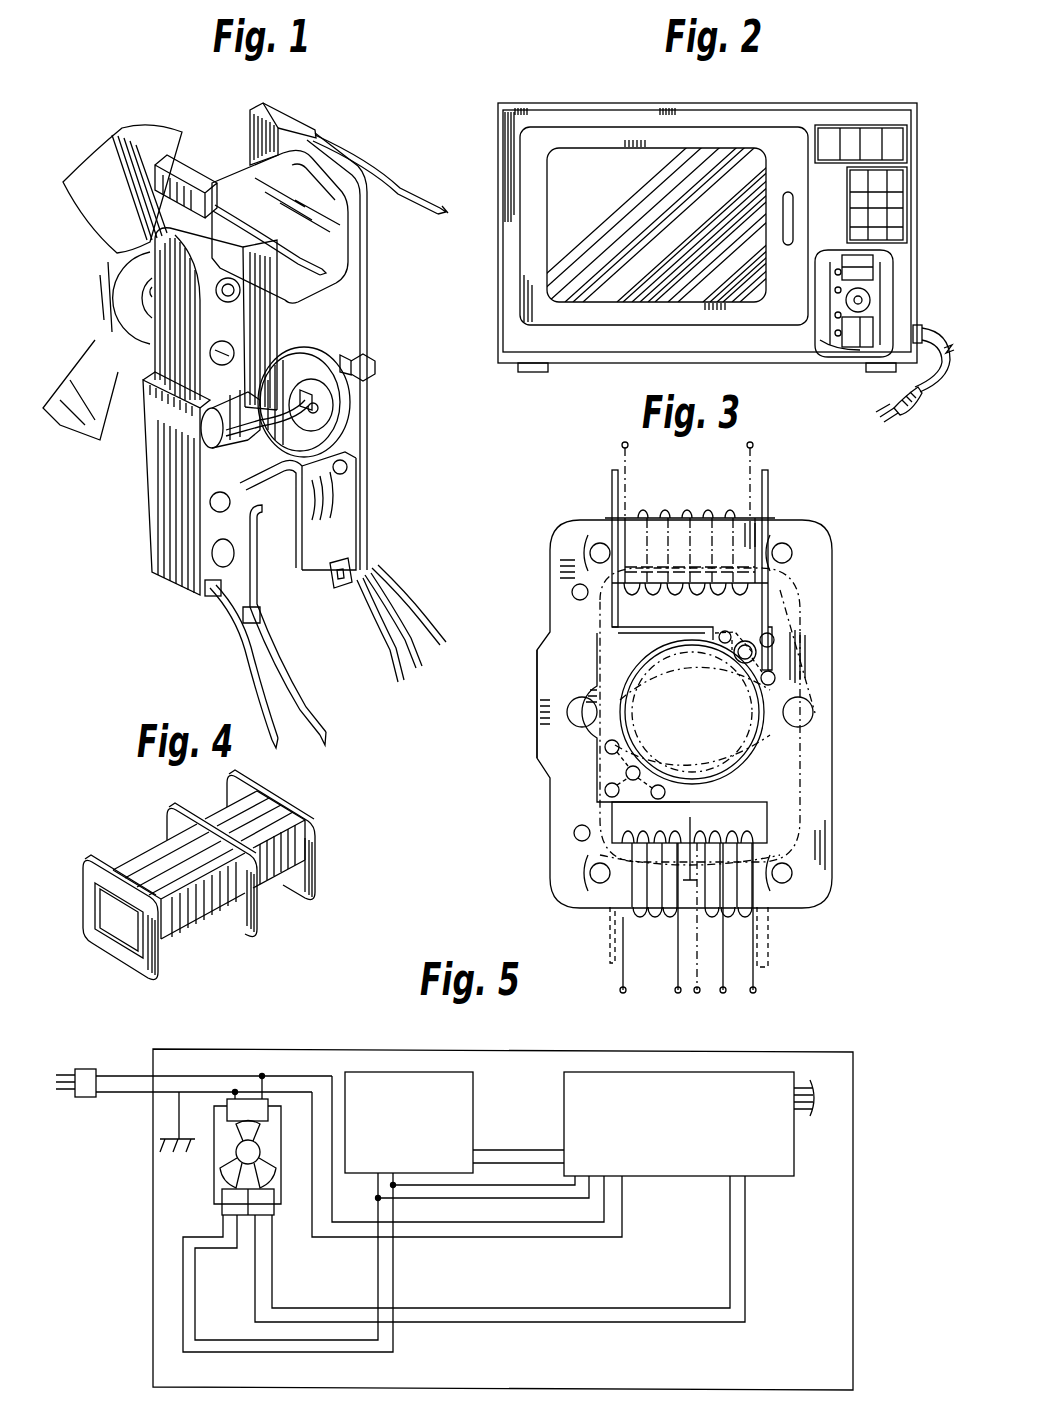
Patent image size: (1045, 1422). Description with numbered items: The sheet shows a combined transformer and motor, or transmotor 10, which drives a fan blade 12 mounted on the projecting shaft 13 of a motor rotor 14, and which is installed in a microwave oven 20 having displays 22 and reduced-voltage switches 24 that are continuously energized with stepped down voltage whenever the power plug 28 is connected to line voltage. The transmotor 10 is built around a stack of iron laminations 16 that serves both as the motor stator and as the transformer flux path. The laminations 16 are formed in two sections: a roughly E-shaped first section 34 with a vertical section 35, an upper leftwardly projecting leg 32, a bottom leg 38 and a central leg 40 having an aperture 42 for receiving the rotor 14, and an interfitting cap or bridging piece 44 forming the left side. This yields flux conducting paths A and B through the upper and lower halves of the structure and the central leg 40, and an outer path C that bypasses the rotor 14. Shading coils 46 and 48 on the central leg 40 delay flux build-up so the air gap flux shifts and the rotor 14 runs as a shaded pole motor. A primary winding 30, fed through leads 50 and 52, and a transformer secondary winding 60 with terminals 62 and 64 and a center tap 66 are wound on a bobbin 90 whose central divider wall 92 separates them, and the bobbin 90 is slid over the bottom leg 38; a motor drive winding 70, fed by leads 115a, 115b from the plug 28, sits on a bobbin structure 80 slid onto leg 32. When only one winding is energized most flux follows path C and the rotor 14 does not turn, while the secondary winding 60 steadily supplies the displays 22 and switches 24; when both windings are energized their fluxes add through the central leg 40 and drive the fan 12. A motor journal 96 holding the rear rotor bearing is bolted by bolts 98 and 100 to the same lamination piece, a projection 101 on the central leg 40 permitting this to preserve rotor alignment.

In FIG. 1, the transmotor 10 is at (355, 135).
In FIG. 2, the transmotor 10 is at (827, 338).
In FIG. 5, the transmotor 10 is at (200, 1173).
In FIG. 1, the fan blade 12 is at (108, 236).
In FIG. 1, the projecting shaft 13 is at (140, 325).
In FIG. 1, the motor rotor 14 is at (210, 395).
In FIG. 3, the motor rotor 14 is at (610, 715).
In FIG. 1, the stack of iron laminations 16 is at (165, 540).
In FIG. 3, the stack of iron laminations 16 is at (838, 865).
In FIG. 2, the oven 20 is at (770, 95).
In FIG. 2, the displays 22 is at (835, 125).
In FIG. 5, the displays 22 is at (400, 1072).
In FIG. 2, the switches 24 is at (905, 165).
In FIG. 5, the switches 24 is at (780, 1072).
In FIG. 2, the power plug 28 is at (920, 407).
In FIG. 5, the power plug 28 is at (85, 1069).
In FIG. 1, the primary winding 30 is at (290, 560).
In FIG. 3, the primary winding 30 is at (650, 930).
In FIG. 5, the primary winding 30 is at (274, 1207).
In FIG. 3, the leg 32 is at (697, 548).
In FIG. 3, the first section 34 is at (800, 565).
In FIG. 3, the vertical section 35 is at (832, 725).
In FIG. 3, the leg 38 is at (690, 870).
In FIG. 3, the central leg 40 is at (600, 650).
In FIG. 3, the aperture 42 is at (760, 707).
In FIG. 3, the interfitting cap or bridging piece 44 is at (537, 738).
In FIG. 3, the shading coil 46 is at (705, 668).
In FIG. 3, the shading coil 48 is at (740, 632).
In FIG. 1, the lead 50 is at (266, 705).
In FIG. 3, the lead 50 is at (620, 990).
In FIG. 5, the lead 50 is at (730, 1260).
In FIG. 1, the lead 52 is at (305, 692).
In FIG. 3, the lead 52 is at (678, 993).
In FIG. 5, the lead 52 is at (745, 1250).
In FIG. 1, the transformer secondary winding 60 is at (320, 508).
In FIG. 3, the transformer secondary winding 60 is at (728, 800).
In FIG. 5, the transformer secondary winding 60 is at (226, 1207).
In FIG. 1, the terminal 62 is at (385, 643).
In FIG. 3, the terminal 62 is at (697, 993).
In FIG. 5, the terminal 62 is at (378, 1272).
In FIG. 1, the terminal 64 is at (415, 625).
In FIG. 3, the terminal 64 is at (756, 992).
In FIG. 5, the terminal 64 is at (393, 1287).
In FIG. 1, the center tap 66 is at (405, 600).
In FIG. 3, the center tap 66 is at (723, 993).
In FIG. 1, the motor drive winding 70 is at (282, 190).
In FIG. 3, the motor drive winding 70 is at (688, 500).
In FIG. 5, the motor drive winding 70 is at (250, 1099).
In FIG. 1, the bobbin structure 80 is at (250, 128).
In FIG. 4, the bobbin 90 is at (222, 950).
In FIG. 4, the central divider wall 92 is at (257, 935).
In FIG. 1, the motor journal 96 is at (332, 410).
In FIG. 1, the bolt 98 is at (372, 375).
In FIG. 1, the bolt 100 is at (225, 478).
In FIG. 1, the projection 101 is at (205, 445).
In FIG. 3, the projection 101 is at (565, 768).
In FIG. 1, the lead 115a is at (305, 255).
In FIG. 3, the lead 115a is at (622, 444).
In FIG. 5, the lead 115a is at (235, 1092).
In FIG. 1, the lead 115b is at (398, 192).
In FIG. 3, the lead 115b is at (753, 444).
In FIG. 5, the lead 115b is at (190, 1076).
In FIG. 3, the flux conducting path A is at (782, 590).
In FIG. 3, the flux conducting path B is at (768, 792).
In FIG. 3, the flux path C is at (812, 652).